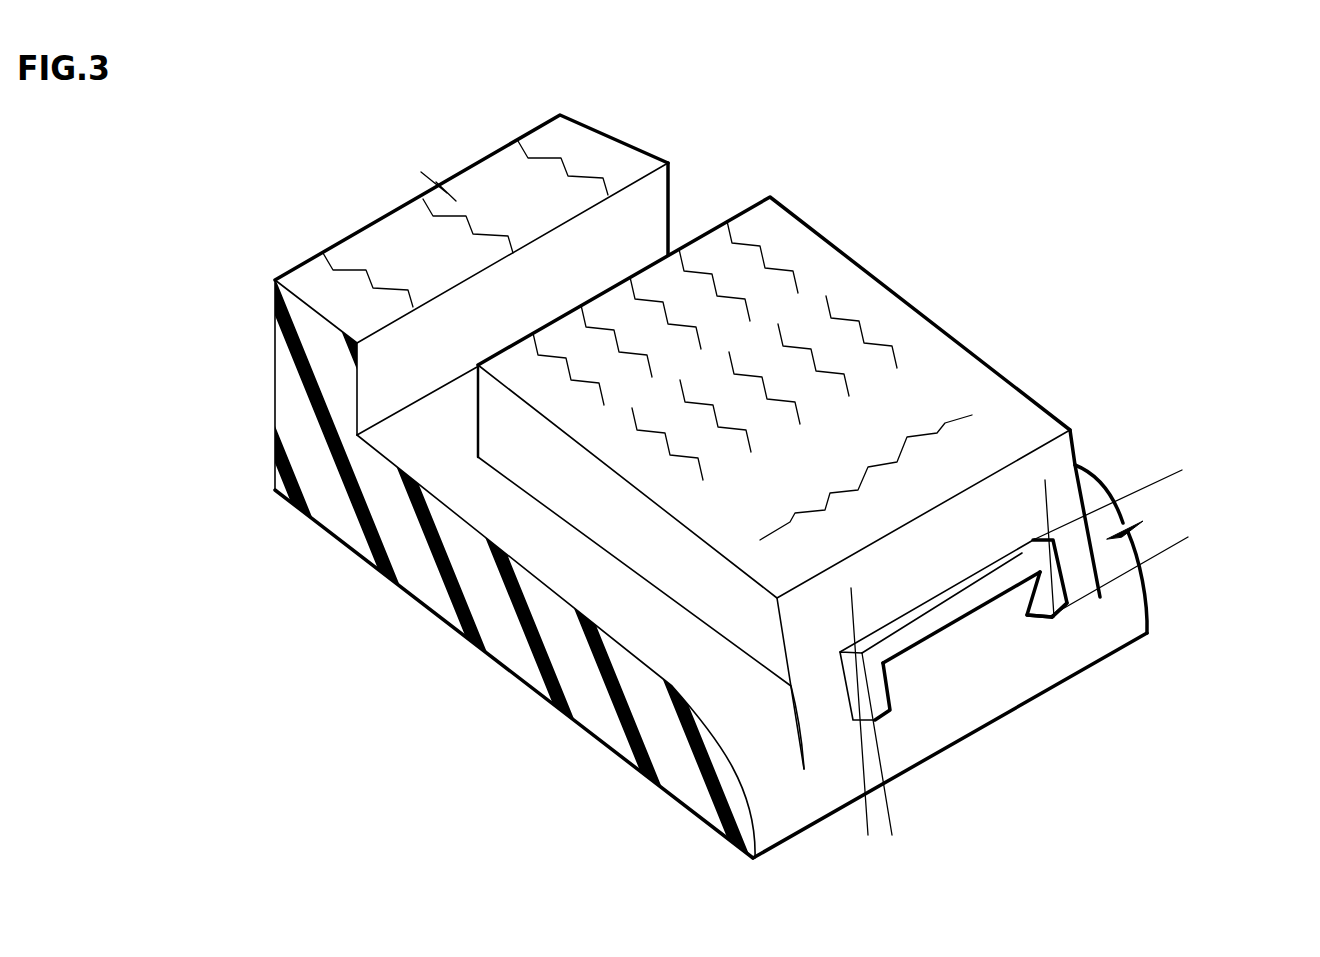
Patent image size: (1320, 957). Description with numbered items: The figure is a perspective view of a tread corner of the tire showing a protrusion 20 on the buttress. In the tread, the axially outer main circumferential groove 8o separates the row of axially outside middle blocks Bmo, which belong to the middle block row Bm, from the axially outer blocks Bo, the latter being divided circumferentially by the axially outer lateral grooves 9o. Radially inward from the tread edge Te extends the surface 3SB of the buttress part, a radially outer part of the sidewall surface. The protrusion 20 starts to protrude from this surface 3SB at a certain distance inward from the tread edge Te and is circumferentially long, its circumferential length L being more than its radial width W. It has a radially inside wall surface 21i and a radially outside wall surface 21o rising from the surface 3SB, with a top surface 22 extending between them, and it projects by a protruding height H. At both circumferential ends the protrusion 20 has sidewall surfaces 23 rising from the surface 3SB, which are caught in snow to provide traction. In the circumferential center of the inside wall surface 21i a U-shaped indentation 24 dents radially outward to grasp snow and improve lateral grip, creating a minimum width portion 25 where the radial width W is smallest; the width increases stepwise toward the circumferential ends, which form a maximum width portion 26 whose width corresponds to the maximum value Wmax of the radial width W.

The axially outer main circumferential groove 8o is at (655, 252).
The axially outside middle block Bmo is at (398, 233).
The middle block Bm is at (445, 275).
The axially outer block Bo is at (795, 243).
The axially outer lateral groove 9o is at (539, 541).
The protrusion 20 is at (977, 606).
The radially outside wall surface 21o is at (1025, 560).
The radially inside wall surface 21i is at (963, 617).
The top surface 22 is at (890, 645).
The sidewall surface 23 is at (860, 682).
The maximum width portion 26 is at (977, 720).
The indentation 24 is at (1043, 572).
The minimum width portion 25 is at (1003, 595).
The tread edge Te is at (1043, 447).
The surface of the buttress part 3SB is at (1063, 488).
The maximum value of the radial width Wmax is at (1168, 477).
The radial width W is at (1167, 542).
The circumferential length L is at (1045, 482).
The protruding height H is at (923, 823).